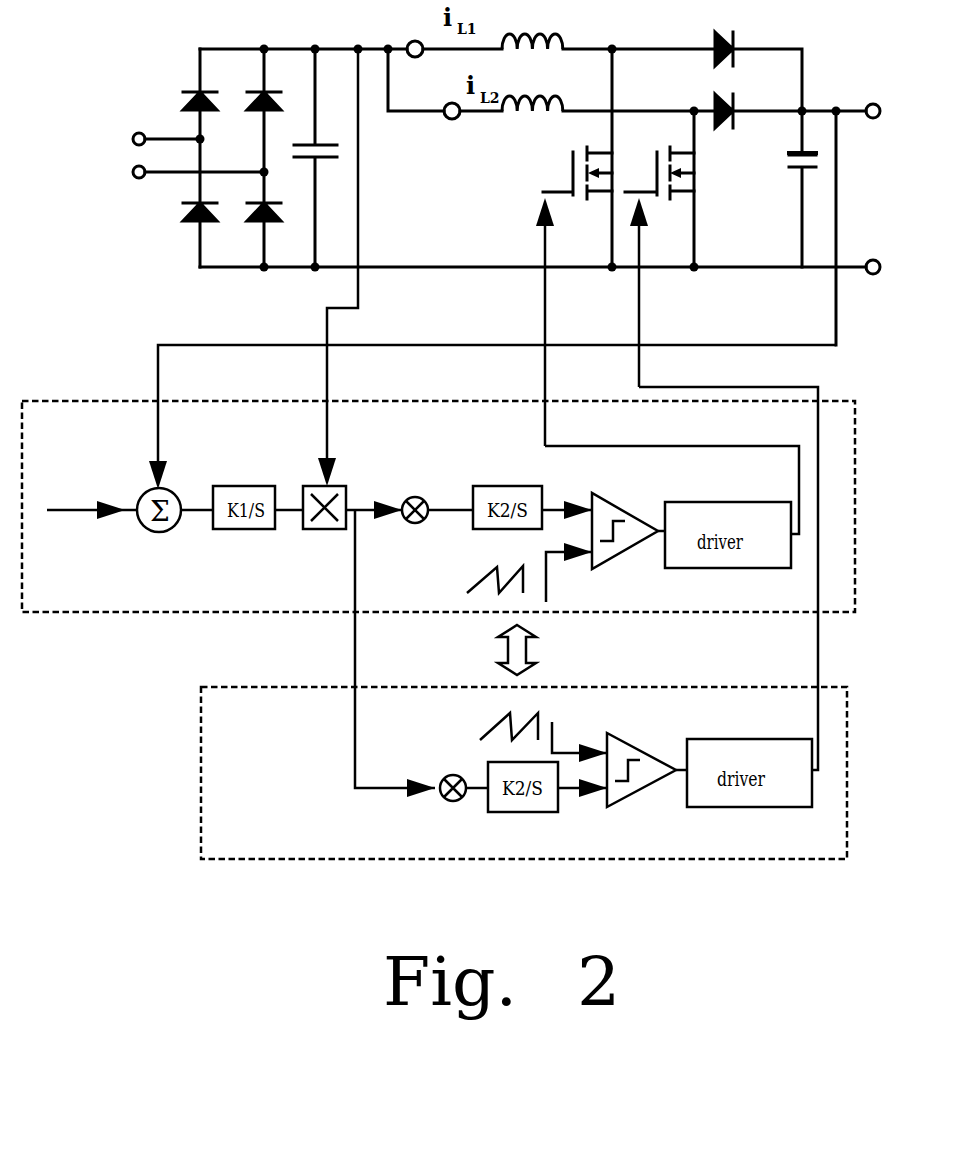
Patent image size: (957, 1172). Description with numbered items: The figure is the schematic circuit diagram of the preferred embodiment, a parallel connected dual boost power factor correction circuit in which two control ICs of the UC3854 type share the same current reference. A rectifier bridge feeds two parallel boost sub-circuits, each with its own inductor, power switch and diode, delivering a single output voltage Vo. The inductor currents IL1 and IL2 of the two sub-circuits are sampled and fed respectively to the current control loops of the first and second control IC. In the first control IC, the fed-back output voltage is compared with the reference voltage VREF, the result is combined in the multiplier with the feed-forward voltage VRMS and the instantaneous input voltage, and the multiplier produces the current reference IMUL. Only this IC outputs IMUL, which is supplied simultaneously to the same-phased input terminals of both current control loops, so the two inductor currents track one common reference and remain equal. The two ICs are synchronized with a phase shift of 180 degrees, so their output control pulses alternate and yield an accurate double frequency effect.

The output voltage Vo is at (841, 224).
The feed-forward voltage VRMS is at (307, 289).
The inductor current of the first sub-circuit IL1 is at (415, 57).
The inductor current of the second sub-circuit IL2 is at (452, 119).
The reference voltage VREF is at (89, 502).
The current reference IMUL is at (395, 653).
The phase shift of 180 degrees 180 is at (638, 650).